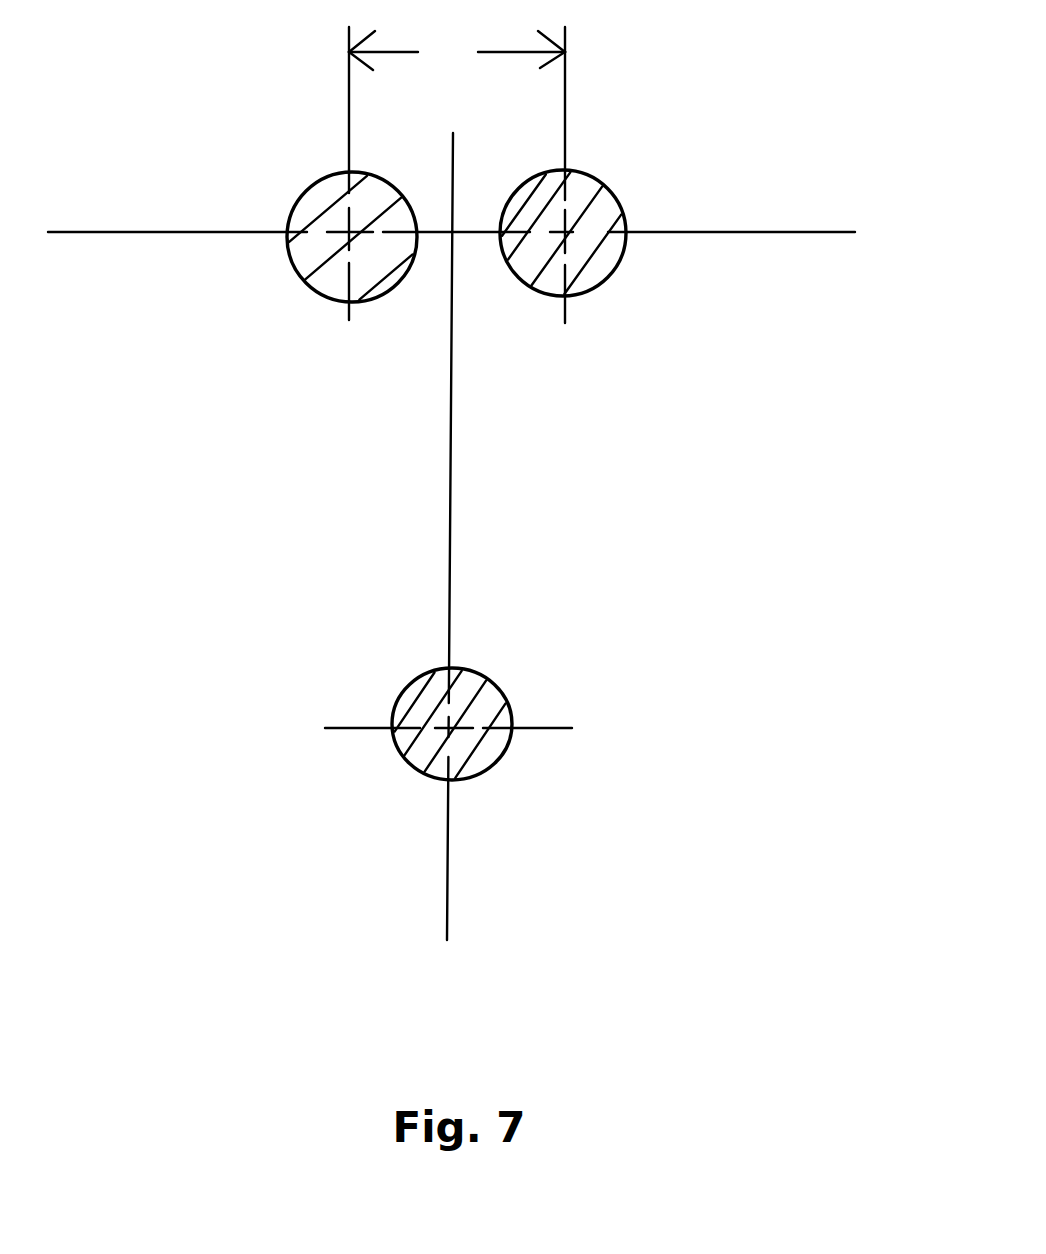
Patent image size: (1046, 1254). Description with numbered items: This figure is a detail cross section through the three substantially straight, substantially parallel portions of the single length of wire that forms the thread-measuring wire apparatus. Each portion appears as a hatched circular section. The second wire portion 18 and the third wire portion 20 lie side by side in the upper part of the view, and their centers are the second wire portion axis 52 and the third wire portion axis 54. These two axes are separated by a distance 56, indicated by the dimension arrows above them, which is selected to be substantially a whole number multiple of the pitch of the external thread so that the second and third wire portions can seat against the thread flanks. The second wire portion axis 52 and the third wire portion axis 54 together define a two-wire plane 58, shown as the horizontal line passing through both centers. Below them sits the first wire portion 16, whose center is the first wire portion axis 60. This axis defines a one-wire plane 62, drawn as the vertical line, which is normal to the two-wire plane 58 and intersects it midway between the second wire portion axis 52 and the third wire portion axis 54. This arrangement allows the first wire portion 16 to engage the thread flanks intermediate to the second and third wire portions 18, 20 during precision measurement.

The first wire portion 16 is at (460, 791).
The second wire portion 18 is at (290, 209).
The third wire portion 20 is at (629, 186).
The second wire portion axis 52 is at (348, 232).
The third wire portion axis 54 is at (562, 245).
The distance 56 is at (457, 113).
The two-wire plane 58 is at (760, 232).
The first wire portion axis 60 is at (455, 733).
The one-wire plane 62 is at (452, 515).